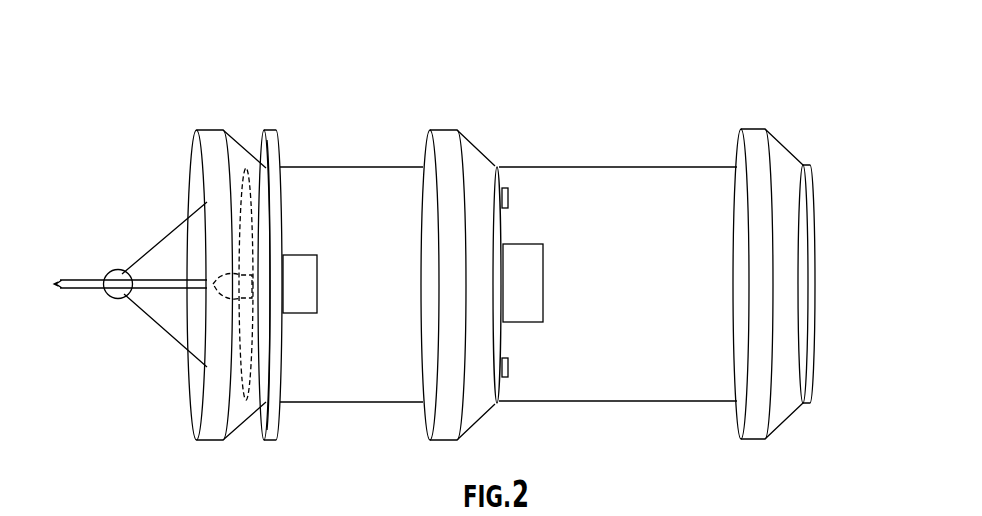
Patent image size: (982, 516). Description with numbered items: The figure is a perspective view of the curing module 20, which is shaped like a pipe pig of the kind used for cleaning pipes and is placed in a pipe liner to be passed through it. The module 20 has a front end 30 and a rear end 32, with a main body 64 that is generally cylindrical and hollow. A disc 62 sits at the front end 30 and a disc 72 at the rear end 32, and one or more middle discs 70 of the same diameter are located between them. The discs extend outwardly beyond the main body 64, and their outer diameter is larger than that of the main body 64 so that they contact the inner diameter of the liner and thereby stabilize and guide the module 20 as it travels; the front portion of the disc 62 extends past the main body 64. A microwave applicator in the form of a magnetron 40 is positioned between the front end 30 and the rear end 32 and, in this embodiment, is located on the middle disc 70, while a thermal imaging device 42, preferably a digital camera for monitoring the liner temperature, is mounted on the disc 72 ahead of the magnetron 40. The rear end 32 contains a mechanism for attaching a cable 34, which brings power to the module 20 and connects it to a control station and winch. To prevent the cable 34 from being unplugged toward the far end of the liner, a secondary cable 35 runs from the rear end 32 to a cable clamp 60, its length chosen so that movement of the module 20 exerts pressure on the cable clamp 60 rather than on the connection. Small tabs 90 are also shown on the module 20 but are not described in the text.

The module 20 is at (571, 108).
The front end 30 is at (806, 218).
The rear end 32 is at (257, 215).
The cable 34 is at (88, 283).
The secondary cable 35 is at (168, 228).
The magnetron 40 is at (528, 282).
The thermal imaging device 42 is at (308, 290).
The cable clamp 60 is at (113, 292).
The disc 62 is at (787, 147).
The main body 64 is at (670, 165).
The middle disc 70 is at (495, 163).
The disc 72 is at (257, 170).
The tab 90 is at (508, 367).